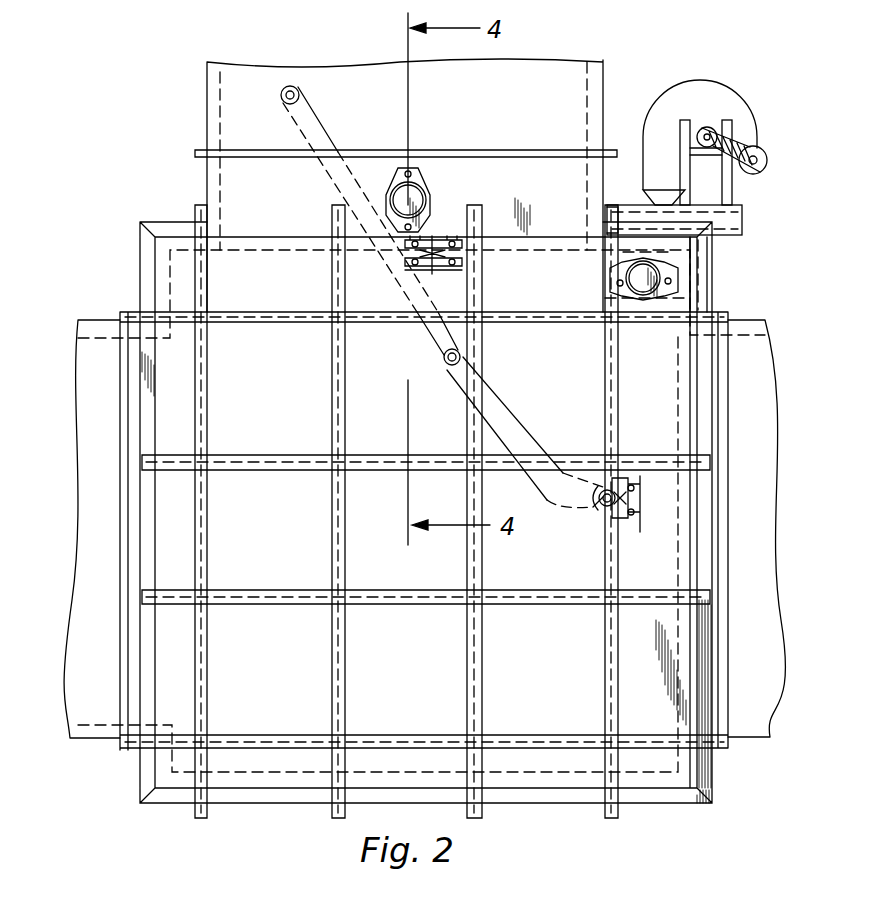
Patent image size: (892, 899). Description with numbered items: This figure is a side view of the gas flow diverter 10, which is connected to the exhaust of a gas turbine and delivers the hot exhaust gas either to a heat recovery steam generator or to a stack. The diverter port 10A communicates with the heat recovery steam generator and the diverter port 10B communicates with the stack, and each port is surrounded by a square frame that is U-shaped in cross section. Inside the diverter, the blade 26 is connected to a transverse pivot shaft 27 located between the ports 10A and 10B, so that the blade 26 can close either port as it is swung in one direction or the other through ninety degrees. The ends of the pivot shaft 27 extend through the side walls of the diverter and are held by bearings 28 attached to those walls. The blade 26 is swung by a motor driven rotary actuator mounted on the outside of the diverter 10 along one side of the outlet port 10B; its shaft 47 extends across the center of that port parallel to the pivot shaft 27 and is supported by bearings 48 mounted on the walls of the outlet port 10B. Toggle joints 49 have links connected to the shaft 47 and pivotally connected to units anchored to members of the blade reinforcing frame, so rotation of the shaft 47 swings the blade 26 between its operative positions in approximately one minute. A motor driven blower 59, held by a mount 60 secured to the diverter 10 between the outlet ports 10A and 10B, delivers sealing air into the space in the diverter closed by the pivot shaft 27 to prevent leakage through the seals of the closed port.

The gas flow diverter 10 is at (128, 285).
The diverter port 10A is at (741, 322).
The diverter port 10B is at (205, 174).
The blade 26 is at (507, 242).
The pivot shaft 27 is at (665, 266).
The bearings 28 is at (668, 278).
The shaft 47 is at (432, 238).
The bearings 48 is at (412, 183).
The toggle joints 49 is at (328, 100).
The motor driven blower 59 is at (737, 88).
The mount 60 is at (742, 215).